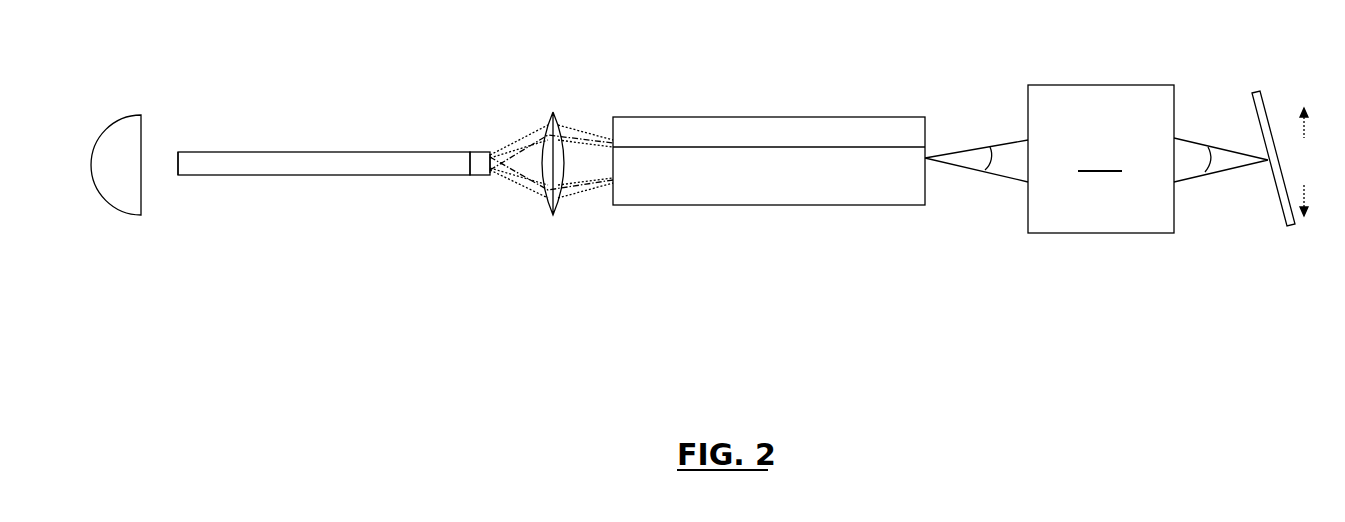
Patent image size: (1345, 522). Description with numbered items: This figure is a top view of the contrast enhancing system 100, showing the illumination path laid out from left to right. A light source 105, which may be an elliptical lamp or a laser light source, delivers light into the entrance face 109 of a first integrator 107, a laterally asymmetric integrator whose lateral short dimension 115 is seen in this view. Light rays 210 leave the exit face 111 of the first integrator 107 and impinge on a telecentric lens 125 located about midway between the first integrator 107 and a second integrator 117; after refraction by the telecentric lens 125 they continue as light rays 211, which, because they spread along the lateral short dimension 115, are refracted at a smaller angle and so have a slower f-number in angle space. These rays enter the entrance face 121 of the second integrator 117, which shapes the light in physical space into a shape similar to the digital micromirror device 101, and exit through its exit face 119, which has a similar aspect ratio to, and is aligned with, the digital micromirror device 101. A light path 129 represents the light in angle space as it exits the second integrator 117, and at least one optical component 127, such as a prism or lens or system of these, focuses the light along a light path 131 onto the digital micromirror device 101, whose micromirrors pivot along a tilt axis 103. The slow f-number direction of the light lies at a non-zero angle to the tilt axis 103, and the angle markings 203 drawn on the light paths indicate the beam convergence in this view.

The contrast enhancing system 100 is at (290, 365).
The digital micromirror device (DMD) 101 is at (1250, 100).
The tilt axis 103 is at (1328, 172).
The light source 105 is at (141, 205).
The first integrator 107 is at (383, 178).
The entrance face 109 is at (170, 165).
The exit face 111 is at (493, 145).
The lateral short dimension 115 is at (468, 167).
The second integrator 117 is at (805, 206).
The exit face 119 is at (931, 122).
The entrance face 121 is at (603, 120).
The telecentric lens 125 is at (550, 205).
The optical component 127 is at (1101, 159).
The light path 129 is at (1010, 140).
The light path 131 is at (1243, 172).
The beam angle 203 is at (985, 170).
The light rays 210 is at (518, 124).
The light rays 211 is at (563, 116).